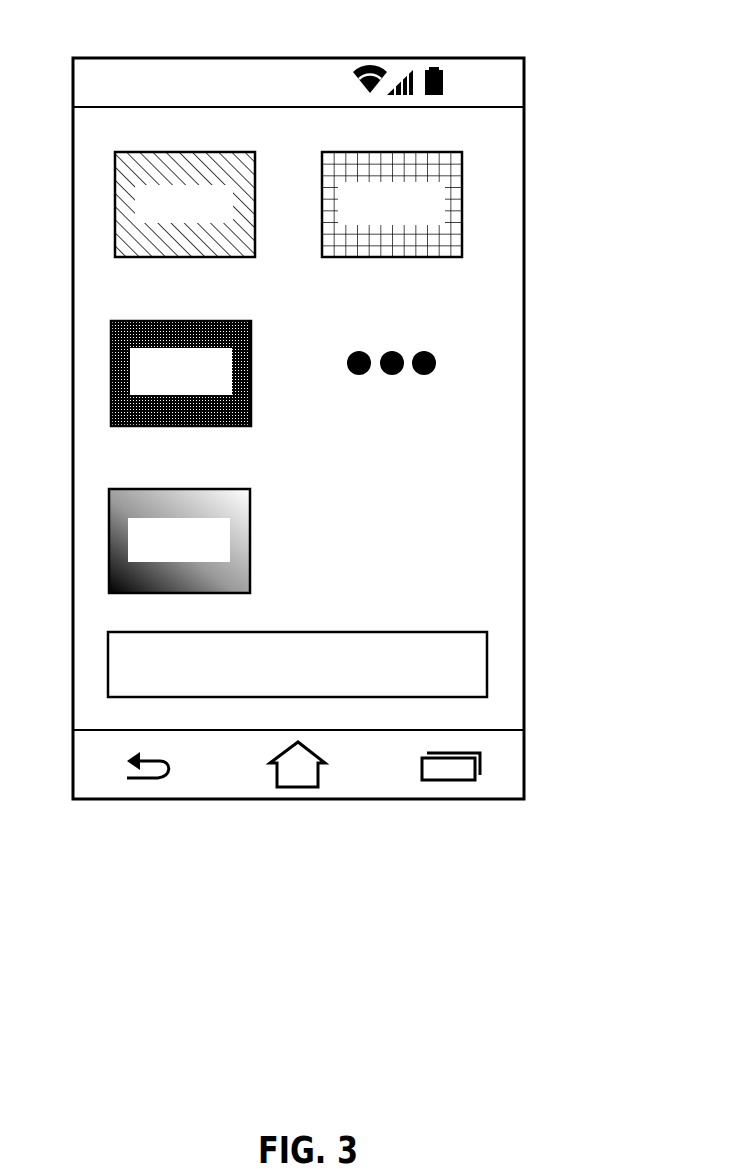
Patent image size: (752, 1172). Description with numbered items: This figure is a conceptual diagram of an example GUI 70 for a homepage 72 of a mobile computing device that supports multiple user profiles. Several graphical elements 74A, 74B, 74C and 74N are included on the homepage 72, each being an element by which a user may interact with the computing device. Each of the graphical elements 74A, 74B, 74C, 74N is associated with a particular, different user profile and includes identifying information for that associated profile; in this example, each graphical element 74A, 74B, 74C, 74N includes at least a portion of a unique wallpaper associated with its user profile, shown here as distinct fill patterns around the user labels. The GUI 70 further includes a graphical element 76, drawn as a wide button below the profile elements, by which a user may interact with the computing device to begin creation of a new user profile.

The GUI 70 is at (490, 58).
The homepage 72 is at (526, 163).
The graphical element 74A is at (185, 152).
The graphical element 74B is at (390, 152).
The graphical element 74C is at (180, 321).
The graphical element 74N is at (178, 489).
The graphical element 76 is at (297, 632).